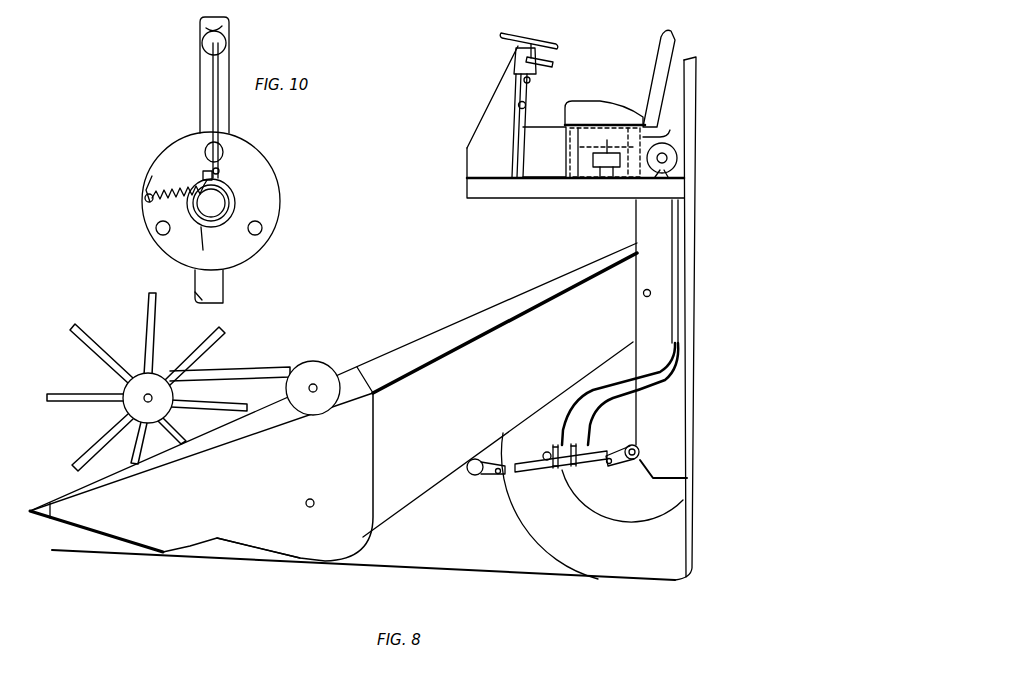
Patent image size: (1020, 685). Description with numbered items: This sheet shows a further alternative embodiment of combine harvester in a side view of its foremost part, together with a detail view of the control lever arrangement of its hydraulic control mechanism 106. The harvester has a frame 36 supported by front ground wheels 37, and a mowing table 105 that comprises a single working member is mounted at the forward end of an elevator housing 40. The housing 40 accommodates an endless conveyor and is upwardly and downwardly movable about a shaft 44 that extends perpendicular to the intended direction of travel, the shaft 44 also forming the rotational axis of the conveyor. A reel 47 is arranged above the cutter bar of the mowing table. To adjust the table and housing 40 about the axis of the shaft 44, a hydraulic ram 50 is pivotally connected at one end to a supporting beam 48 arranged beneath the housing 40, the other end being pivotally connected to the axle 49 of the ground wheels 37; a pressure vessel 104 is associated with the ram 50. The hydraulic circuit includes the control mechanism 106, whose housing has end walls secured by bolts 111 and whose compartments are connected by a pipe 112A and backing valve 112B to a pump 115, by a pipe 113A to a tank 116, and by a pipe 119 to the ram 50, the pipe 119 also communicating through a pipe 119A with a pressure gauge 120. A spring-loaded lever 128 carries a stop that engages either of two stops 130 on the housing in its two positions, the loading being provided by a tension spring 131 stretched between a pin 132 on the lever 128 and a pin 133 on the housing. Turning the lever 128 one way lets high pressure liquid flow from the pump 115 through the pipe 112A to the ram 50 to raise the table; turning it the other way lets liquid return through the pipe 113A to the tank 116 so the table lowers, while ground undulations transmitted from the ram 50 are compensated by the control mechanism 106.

In FIG. 8, the frame 36 is at (675, 484).
In FIG. 8, the front ground wheels 37 is at (553, 543).
In FIG. 8, the elevator housing 40 is at (453, 358).
In FIG. 8, the shaft 44 is at (643, 294).
In FIG. 8, the reel 47 is at (86, 451).
In FIG. 8, the supporting beam 48 is at (476, 475).
In FIG. 8, the axle 49 is at (640, 452).
In FIG. 8, the hydraulic ram 50 is at (527, 472).
In FIG. 8, the pressure vessel 104 is at (549, 454).
In FIG. 8, the mowing table 105 is at (270, 556).
In FIG. 10, the control mechanism 106 is at (526, 105).
In FIG. 10, the bolts 111 is at (268, 238).
In FIG. 10, the pipe 112A is at (224, 292).
In FIG. 10, the backing valve 112B is at (587, 199).
In FIG. 10, the pipe 113A is at (547, 170).
In FIG. 10, the pump 115 is at (623, 78).
In FIG. 10, the tank 116 is at (616, 199).
In FIG. 10, the pipe 119 is at (200, 90).
In FIG. 10, the pipe 119A is at (514, 58).
In FIG. 10, the pressure gauge 120 is at (556, 61).
In FIG. 10, the lever 128 is at (531, 81).
In FIG. 10, the stops 130 is at (201, 208).
In FIG. 10, the tension spring 131 is at (152, 176).
In FIG. 10, the pin 132 is at (218, 172).
In FIG. 10, the pin 133 is at (146, 200).